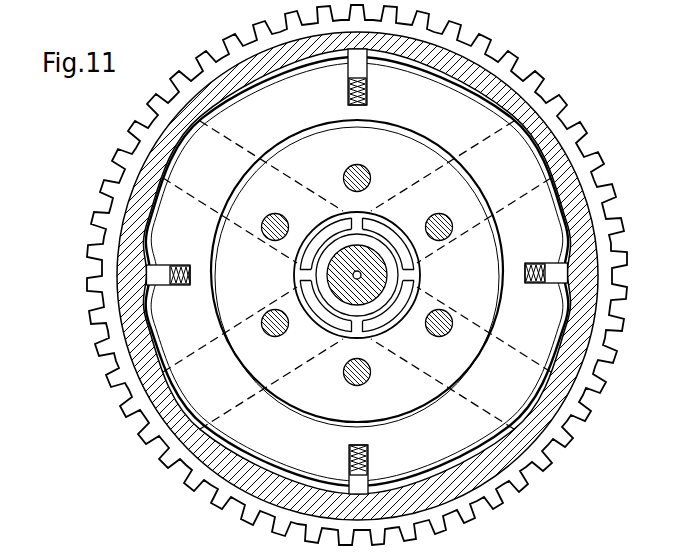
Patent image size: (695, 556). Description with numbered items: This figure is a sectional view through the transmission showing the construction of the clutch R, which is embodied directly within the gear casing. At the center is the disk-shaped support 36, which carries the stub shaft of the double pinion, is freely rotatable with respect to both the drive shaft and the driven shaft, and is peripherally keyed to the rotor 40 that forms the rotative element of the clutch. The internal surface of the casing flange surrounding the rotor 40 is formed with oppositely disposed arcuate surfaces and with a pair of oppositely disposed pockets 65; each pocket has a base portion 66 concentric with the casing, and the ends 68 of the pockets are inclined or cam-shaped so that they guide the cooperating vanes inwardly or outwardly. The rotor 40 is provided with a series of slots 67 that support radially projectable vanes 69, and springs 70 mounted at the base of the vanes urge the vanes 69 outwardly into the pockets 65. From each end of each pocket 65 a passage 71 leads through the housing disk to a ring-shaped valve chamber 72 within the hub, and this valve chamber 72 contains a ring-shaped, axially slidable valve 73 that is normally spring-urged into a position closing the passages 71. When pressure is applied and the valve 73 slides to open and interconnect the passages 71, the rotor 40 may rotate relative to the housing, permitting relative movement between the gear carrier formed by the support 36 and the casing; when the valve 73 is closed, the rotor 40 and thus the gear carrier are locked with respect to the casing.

The disk-shaped support 36 is at (428, 396).
The rotor 40 is at (357, 272).
The pockets 65 is at (450, 77).
The base portion 66 is at (247, 485).
The slots 67 is at (370, 80).
The ends of the pockets 68 is at (155, 382).
The vanes 69 is at (355, 70).
The springs 70 is at (348, 97).
The passages 71 is at (183, 192).
The valve chamber 72 is at (418, 261).
The valve 73 is at (385, 298).